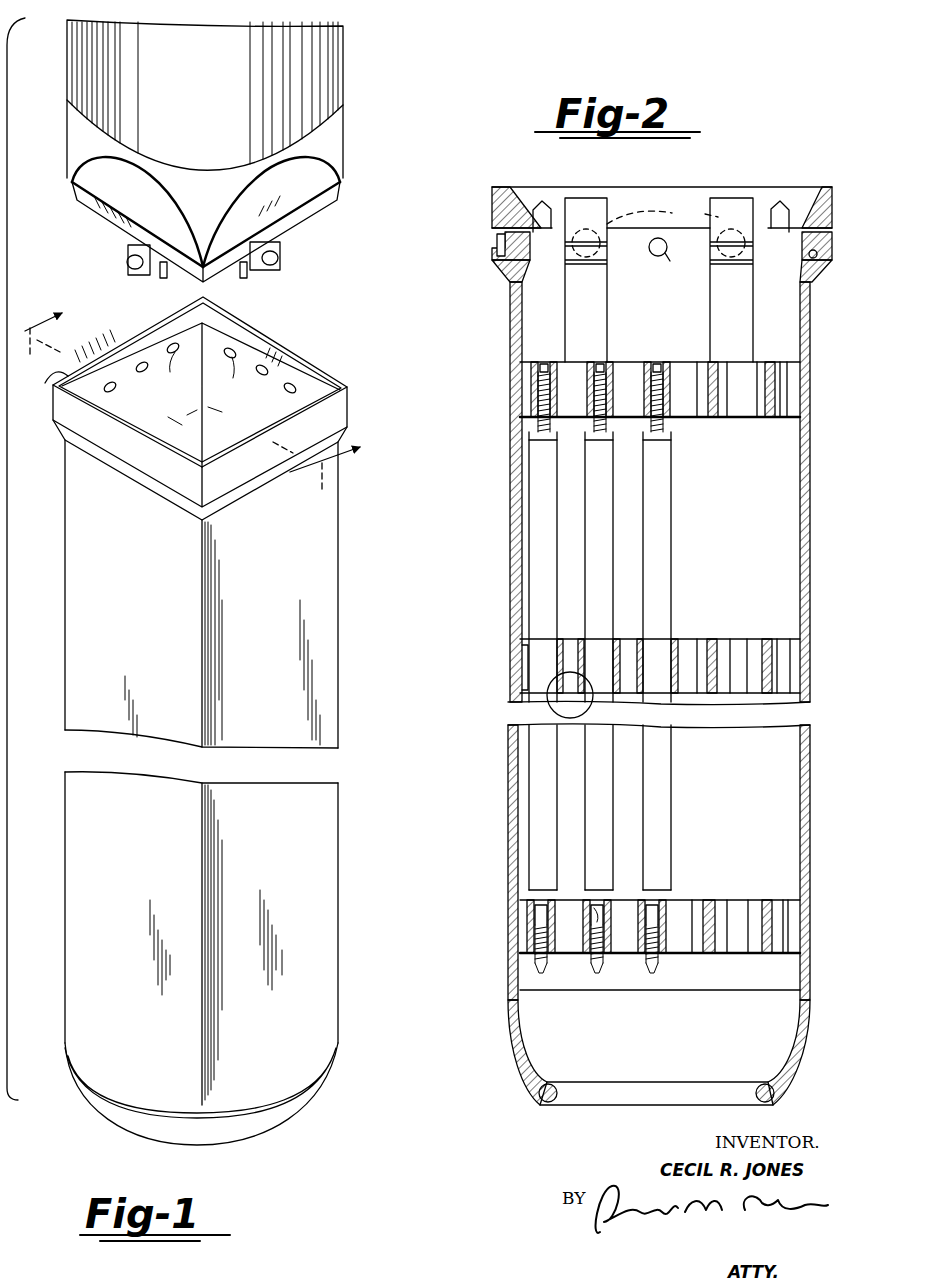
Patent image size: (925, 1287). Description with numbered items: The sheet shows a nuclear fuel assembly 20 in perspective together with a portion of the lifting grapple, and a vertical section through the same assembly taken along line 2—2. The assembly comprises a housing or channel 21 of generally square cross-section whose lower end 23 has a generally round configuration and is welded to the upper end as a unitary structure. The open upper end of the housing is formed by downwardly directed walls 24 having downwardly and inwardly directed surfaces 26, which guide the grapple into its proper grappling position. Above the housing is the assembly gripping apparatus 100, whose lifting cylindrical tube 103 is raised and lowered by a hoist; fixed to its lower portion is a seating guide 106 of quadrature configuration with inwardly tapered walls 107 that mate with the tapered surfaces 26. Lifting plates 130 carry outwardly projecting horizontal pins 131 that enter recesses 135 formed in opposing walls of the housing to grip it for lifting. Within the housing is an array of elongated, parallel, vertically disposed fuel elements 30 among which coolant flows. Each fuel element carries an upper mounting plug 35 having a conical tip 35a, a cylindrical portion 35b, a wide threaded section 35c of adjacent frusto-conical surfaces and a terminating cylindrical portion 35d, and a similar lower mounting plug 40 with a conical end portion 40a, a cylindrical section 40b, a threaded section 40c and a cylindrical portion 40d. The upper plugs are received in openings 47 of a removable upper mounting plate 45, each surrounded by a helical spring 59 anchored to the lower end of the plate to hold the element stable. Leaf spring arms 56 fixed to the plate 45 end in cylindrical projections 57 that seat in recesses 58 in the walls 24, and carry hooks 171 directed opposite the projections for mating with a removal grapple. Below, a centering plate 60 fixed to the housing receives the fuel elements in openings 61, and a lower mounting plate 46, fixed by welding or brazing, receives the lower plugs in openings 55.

In FIG. 1, the assembly gripping apparatus 100 is at (366, 99).
In FIG. 1, the lifting cylindrical tube 103 is at (292, 78).
In FIG. 1, the seating guide 106 is at (317, 170).
In FIG. 1, the inwardly tapered walls 107 is at (233, 255).
In FIG. 1, the lifting plates 130 is at (128, 248).
In FIG. 1, the outwardly projecting pins 131 is at (127, 262).
In FIG. 1, the section line 2— 2 is at (206, 391).
In FIG. 1, the nuclear fuel assembly 20 is at (323, 351).
In FIG. 2, the nuclear fuel assembly 20 is at (477, 408).
In FIG. 1, the housing or channel 21 is at (268, 752).
In FIG. 2, the housing or channel 21 is at (507, 743).
In FIG. 1, the lower end of the housing 23 is at (248, 1136).
In FIG. 2, the lower end of the housing 23 is at (567, 1105).
In FIG. 1, the downwardly directed walls 24 is at (67, 402).
In FIG. 2, the downwardly directed walls 24 is at (492, 215).
In FIG. 1, the downwardly and inwardly directed surfaces 26 is at (192, 317).
In FIG. 2, the downwardly and inwardly directed surfaces 26 is at (512, 176).
In FIG. 1, the recesses 135 is at (145, 362).
In FIG. 2, the recesses 135 is at (662, 257).
In FIG. 1, the recesses 58 is at (118, 388).
In FIG. 2, the recesses 58 is at (497, 250).
In FIG. 2, the cylindrical pad or projection 57 is at (492, 236).
In FIG. 2, the hooks 171 is at (540, 198).
In FIG. 2, the leaf spring arms 56 is at (545, 292).
In FIG. 2, the fuel elements 30 is at (533, 526).
In FIG. 2, the upper mounting plug 35 is at (580, 394).
In FIG. 2, the conical tip 35a is at (656, 368).
In FIG. 2, the cylindrical portion 35b is at (603, 366).
In FIG. 2, the threaded section 35c is at (597, 393).
In FIG. 2, the cylindrical portion 35d is at (537, 422).
In FIG. 2, the upper mounting plate 45 is at (740, 407).
In FIG. 2, the openings 47 is at (604, 401).
In FIG. 2, the helical spring 59 is at (597, 425).
In FIG. 2, the centering plate 60 is at (717, 639).
In FIG. 2, the openings 61 is at (670, 653).
In FIG. 2, the lower mounting plate 46 is at (790, 922).
In FIG. 2, the lower mounting plug 40 is at (590, 942).
In FIG. 2, the conical end portion 40a is at (653, 967).
In FIG. 2, the cylindrical section 40b is at (647, 963).
In FIG. 2, the threaded section 40c is at (540, 926).
In FIG. 2, the cylindrical portion 40d is at (537, 912).
In FIG. 2, the openings 55 is at (603, 917).